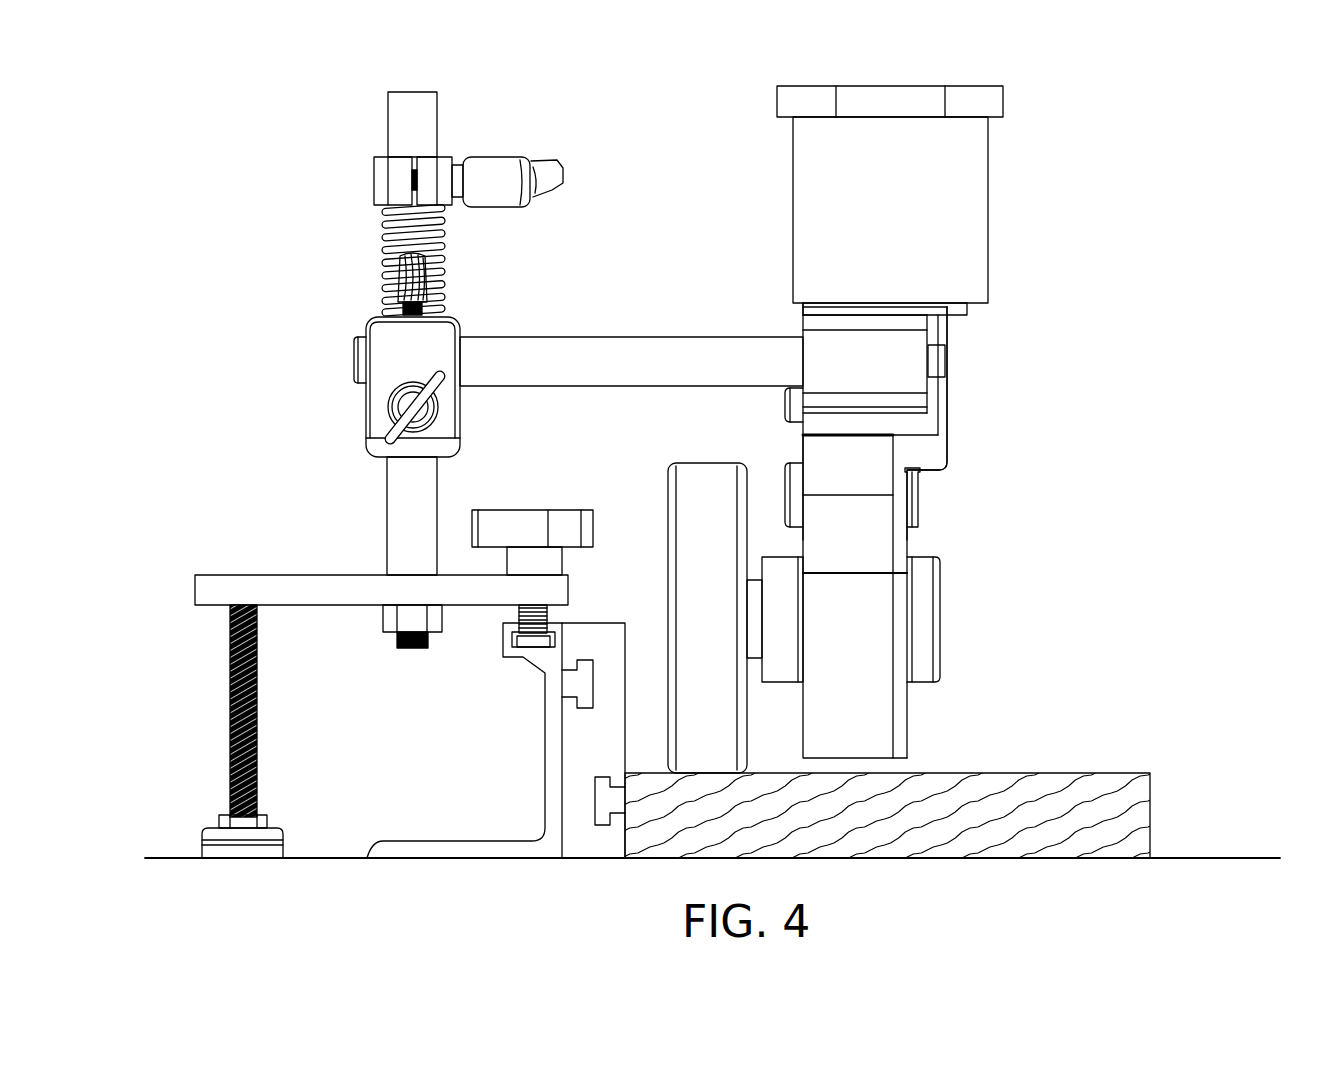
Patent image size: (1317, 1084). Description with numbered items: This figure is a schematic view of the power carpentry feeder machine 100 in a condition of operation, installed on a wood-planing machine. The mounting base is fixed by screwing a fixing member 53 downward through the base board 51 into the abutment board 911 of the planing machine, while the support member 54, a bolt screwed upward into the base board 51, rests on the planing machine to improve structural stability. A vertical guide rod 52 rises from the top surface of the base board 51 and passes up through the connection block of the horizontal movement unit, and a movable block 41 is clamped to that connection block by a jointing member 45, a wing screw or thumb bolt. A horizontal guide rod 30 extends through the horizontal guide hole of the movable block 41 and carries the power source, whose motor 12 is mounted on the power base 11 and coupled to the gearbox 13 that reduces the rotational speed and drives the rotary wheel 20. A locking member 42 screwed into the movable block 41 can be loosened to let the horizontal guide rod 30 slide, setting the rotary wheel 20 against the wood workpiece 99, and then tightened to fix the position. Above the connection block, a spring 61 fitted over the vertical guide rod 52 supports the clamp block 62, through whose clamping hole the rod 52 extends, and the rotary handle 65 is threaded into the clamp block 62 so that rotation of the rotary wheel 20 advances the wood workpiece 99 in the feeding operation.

The power carpentry feeder machine 100 is at (1240, 126).
The power base 11 is at (943, 413).
The motor 12 is at (967, 212).
The gearbox 13 is at (913, 627).
The rotary wheel 20 is at (692, 500).
The horizontal guide rod 30 is at (692, 350).
The movable block 41 is at (381, 361).
The locking member 42 is at (410, 272).
The jointing member 45 is at (380, 438).
The base board 51 is at (218, 586).
The vertical guide rod 52 is at (397, 118).
The fixing member 53 is at (520, 518).
The support member 54 is at (232, 680).
The spring 61 is at (445, 241).
The clamp block 62 is at (376, 180).
The rotary handle 65 is at (494, 165).
The abutment board 911 is at (545, 735).
The wood workpiece 99 is at (1140, 828).